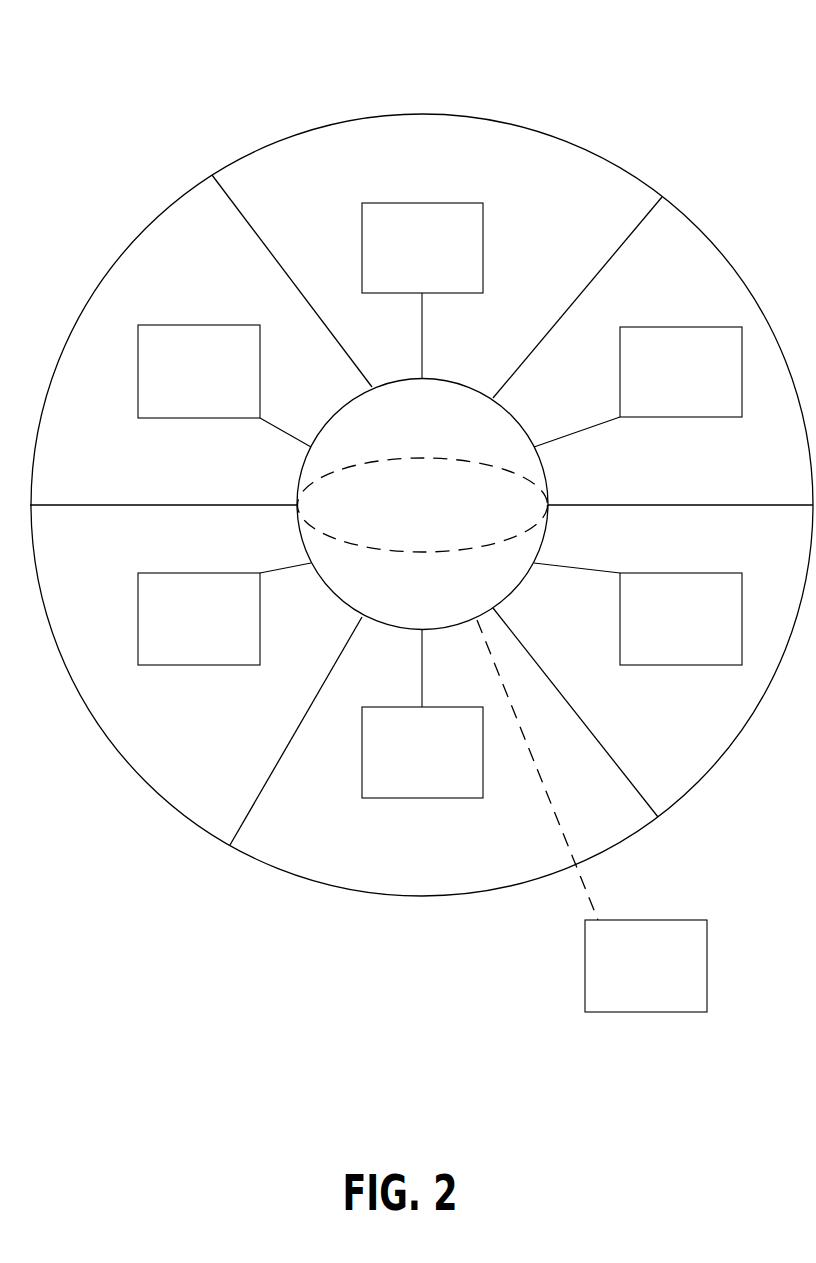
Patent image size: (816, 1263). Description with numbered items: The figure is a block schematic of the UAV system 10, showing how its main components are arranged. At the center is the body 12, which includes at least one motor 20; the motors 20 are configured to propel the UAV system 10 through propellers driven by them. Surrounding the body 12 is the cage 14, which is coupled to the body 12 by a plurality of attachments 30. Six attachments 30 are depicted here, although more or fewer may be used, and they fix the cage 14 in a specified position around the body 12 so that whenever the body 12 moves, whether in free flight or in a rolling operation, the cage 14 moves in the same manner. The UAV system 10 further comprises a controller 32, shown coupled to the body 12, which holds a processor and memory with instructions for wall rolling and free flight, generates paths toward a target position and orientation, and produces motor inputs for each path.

The UAV system 10 is at (673, 68).
The body 12 is at (408, 519).
The cage 14 is at (533, 127).
The motor 20 is at (407, 263).
The attachments 30 is at (255, 227).
The controller 32 is at (631, 980).